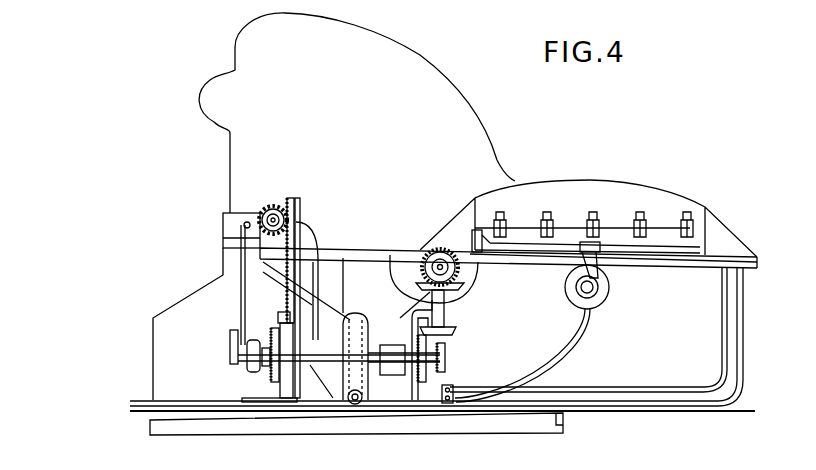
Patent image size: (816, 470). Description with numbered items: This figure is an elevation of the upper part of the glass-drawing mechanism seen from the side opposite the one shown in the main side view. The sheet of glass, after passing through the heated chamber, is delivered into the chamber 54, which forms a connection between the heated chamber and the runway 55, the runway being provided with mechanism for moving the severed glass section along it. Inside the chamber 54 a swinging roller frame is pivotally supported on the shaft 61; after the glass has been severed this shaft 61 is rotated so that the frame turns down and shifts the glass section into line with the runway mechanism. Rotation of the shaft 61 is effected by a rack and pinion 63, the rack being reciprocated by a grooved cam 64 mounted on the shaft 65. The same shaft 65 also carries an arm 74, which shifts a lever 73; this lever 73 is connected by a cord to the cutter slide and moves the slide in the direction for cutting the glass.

The chamber 54 is at (357, 176).
The runway 55 is at (608, 190).
The shaft 61 is at (275, 206).
The rack and pinion 63 is at (244, 225).
The grooved cam 64 is at (273, 337).
The shaft 65 is at (322, 353).
The lever 73 is at (241, 302).
The arm 74 is at (230, 333).